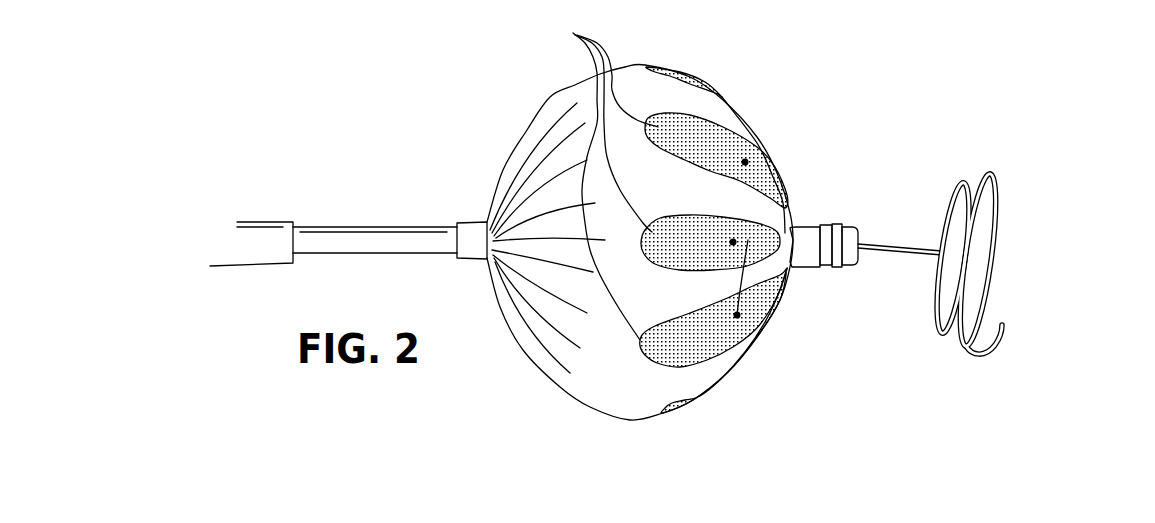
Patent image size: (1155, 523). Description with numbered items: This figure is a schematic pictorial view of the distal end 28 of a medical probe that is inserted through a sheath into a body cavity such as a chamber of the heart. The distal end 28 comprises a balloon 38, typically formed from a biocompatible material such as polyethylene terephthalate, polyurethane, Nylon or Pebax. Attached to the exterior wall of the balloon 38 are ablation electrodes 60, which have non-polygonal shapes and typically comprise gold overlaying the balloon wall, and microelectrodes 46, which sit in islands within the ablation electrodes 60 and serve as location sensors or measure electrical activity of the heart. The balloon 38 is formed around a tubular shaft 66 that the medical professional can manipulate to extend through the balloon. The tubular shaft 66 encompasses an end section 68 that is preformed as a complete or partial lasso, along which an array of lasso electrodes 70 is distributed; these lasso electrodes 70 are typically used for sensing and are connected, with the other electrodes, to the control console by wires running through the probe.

The distal end 28 is at (360, 122).
The balloon 38 is at (527, 130).
The microelectrodes 46 is at (733, 242).
The ablation electrodes 60 is at (573, 34).
The tubular shaft 66 is at (382, 223).
The end section 68 is at (893, 252).
The lasso electrodes 70 is at (997, 193).